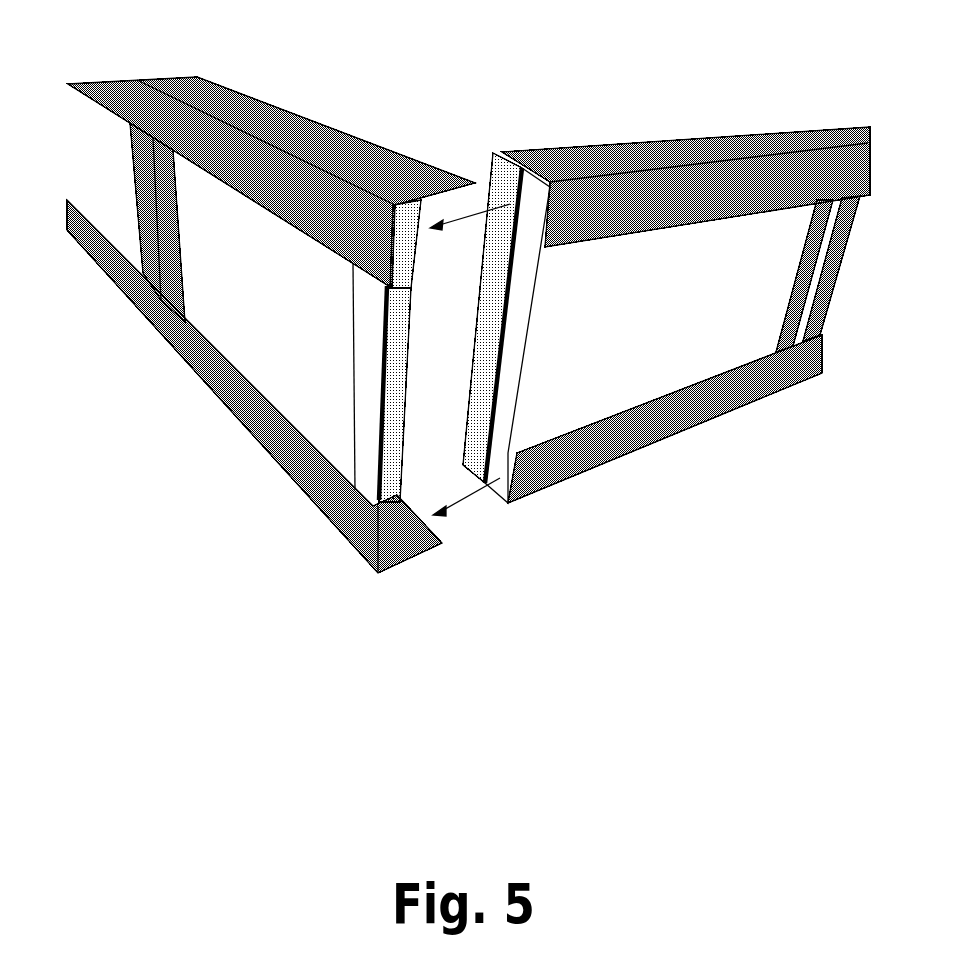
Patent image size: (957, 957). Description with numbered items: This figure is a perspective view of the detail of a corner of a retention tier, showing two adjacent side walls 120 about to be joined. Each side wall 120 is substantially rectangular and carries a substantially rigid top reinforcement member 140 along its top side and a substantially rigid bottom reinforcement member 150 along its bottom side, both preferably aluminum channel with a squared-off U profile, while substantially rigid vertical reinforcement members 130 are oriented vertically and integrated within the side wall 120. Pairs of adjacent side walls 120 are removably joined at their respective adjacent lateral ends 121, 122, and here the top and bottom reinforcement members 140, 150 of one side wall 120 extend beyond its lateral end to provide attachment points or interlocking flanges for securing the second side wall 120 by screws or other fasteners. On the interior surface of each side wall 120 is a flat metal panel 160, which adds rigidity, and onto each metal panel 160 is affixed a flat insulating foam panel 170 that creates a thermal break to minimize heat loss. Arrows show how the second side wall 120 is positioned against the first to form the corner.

The side wall 120 is at (598, 82).
The lateral end 121 is at (510, 405).
The lateral end 122 is at (290, 475).
The vertical reinforcement member 130 is at (183, 153).
The top reinforcement member 140 is at (469, 157).
The bottom reinforcement member 150 is at (223, 377).
The flat metal panel 160 is at (503, 264).
The flat insulating foam panel 170 is at (393, 334).